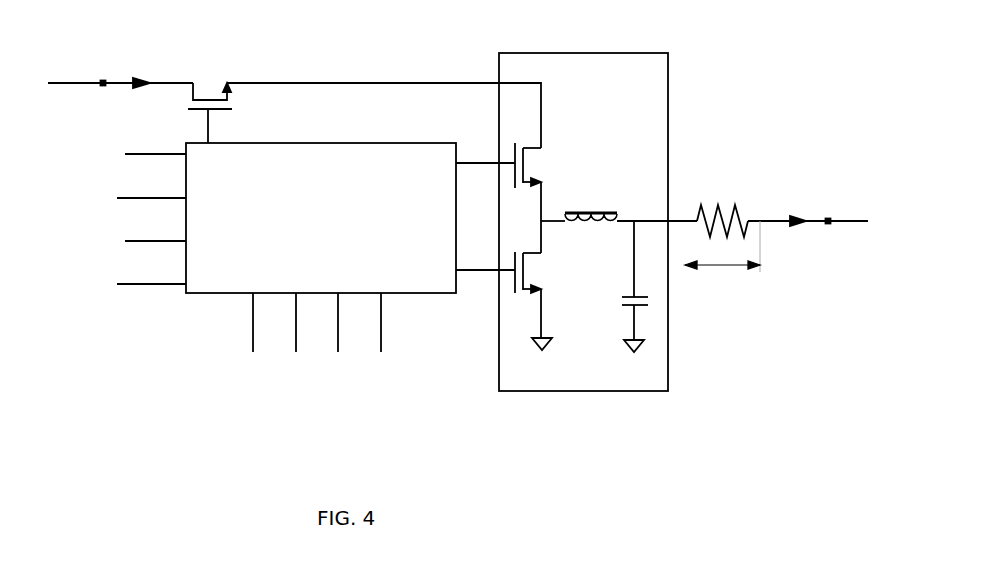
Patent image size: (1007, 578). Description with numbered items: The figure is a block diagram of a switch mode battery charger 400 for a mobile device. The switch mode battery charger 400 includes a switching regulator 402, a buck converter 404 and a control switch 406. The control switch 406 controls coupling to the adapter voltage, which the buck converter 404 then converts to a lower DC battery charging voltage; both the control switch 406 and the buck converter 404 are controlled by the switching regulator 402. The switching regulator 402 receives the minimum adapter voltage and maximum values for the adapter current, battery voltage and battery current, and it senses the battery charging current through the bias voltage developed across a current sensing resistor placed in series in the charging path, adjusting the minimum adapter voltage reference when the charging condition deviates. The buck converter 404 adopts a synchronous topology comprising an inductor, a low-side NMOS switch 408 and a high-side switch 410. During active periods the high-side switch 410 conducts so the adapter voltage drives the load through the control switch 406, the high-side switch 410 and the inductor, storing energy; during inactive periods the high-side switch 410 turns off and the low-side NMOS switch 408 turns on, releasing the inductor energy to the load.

The switch mode battery charger 400 is at (458, 257).
The switching regulator 402 is at (410, 142).
The buck converter 404 is at (668, 64).
The control switch 406 is at (210, 79).
The low-side NMOS switch 408 is at (538, 273).
The high-side switch 410 is at (543, 158).